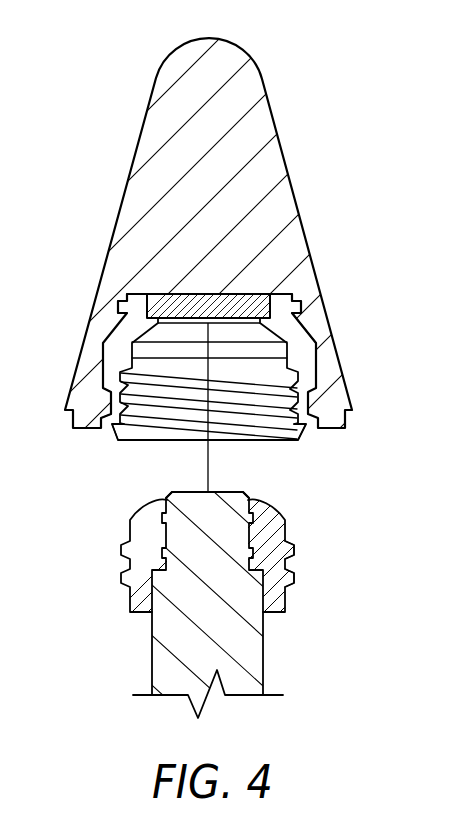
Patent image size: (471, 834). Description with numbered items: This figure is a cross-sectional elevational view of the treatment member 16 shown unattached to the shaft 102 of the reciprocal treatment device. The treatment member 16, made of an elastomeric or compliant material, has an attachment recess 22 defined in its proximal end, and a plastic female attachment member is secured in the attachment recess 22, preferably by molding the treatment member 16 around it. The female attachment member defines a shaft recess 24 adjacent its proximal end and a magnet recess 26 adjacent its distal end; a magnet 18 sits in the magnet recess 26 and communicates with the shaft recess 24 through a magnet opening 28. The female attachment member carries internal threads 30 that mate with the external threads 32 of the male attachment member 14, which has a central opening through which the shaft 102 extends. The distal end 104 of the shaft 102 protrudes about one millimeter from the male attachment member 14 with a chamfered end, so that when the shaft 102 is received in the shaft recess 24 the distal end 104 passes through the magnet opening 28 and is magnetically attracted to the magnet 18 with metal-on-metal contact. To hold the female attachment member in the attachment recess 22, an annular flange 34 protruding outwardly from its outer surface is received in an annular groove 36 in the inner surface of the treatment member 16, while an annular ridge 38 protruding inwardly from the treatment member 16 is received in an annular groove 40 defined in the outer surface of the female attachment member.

The male attachment member 14 is at (280, 557).
The treatment member 16 is at (252, 87).
The magnet 18 is at (253, 294).
The attachment recess 22 is at (300, 330).
The shaft recess 24 is at (270, 365).
The magnet recess 26 is at (288, 297).
The magnet opening 28 is at (170, 320).
The internal threads 30 is at (298, 428).
The external threads 32 is at (288, 571).
The annular flange 34 is at (140, 299).
The annular groove 36 is at (122, 294).
The annular ridge 38 is at (108, 387).
The annular groove 40 is at (107, 425).
The shaft 102 is at (252, 653).
The distal end of the shaft 104 is at (233, 493).